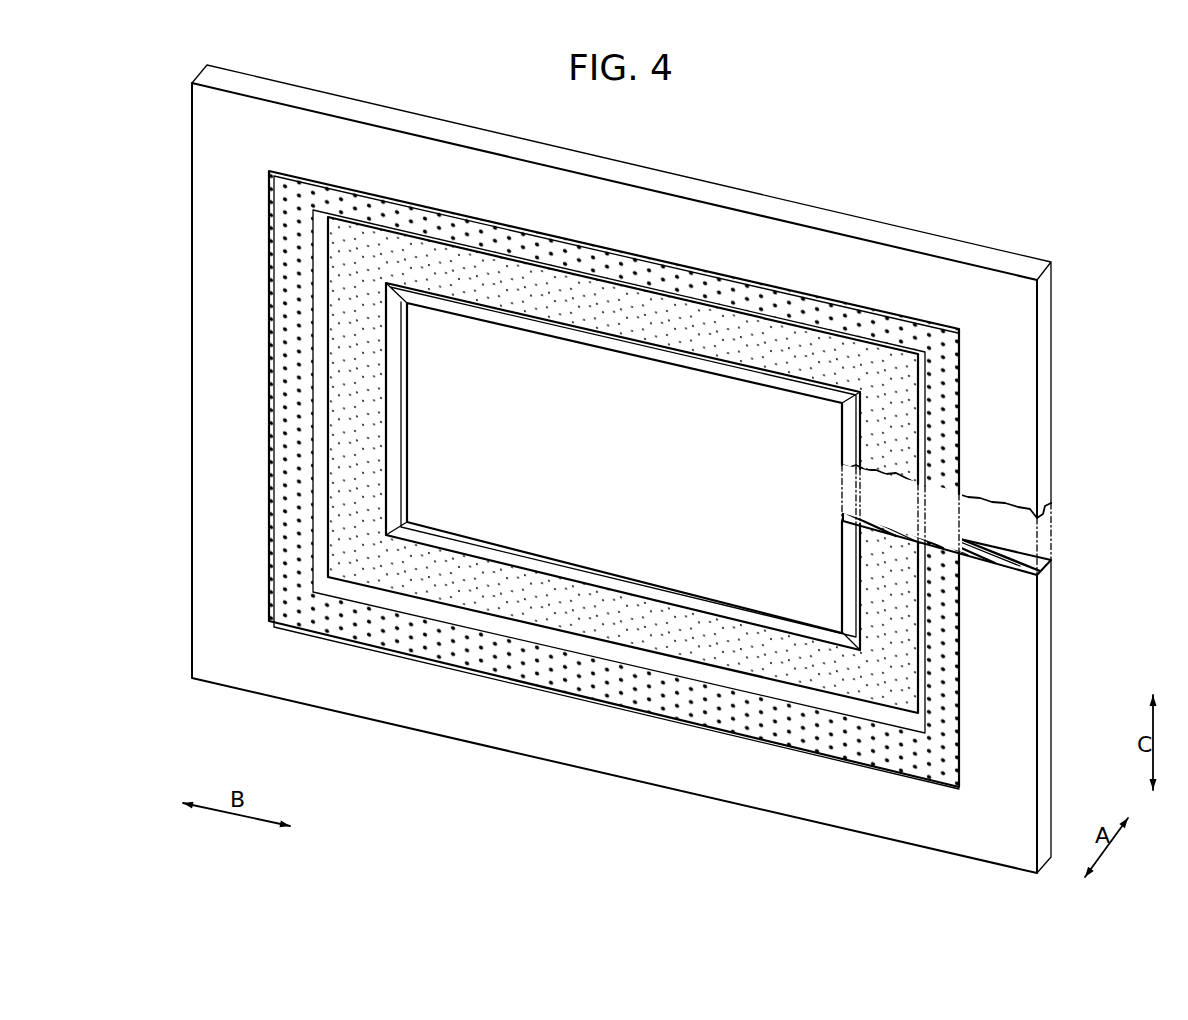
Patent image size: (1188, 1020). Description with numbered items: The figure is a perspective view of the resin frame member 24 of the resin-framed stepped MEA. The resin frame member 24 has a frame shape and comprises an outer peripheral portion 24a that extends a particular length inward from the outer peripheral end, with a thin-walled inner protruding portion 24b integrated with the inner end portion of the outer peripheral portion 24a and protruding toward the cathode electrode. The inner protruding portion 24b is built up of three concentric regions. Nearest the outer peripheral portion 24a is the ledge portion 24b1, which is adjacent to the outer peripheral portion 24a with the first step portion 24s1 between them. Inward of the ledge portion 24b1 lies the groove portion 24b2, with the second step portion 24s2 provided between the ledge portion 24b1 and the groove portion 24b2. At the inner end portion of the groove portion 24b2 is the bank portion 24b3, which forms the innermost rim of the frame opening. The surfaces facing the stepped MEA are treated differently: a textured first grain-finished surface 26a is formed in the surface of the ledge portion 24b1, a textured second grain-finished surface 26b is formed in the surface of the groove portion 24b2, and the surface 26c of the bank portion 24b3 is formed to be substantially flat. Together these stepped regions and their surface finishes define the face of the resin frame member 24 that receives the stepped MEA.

The resin frame member 24 is at (851, 177).
The outer peripheral portion 24a is at (1008, 410).
The inner protruding portion 24b is at (565, 811).
The ledge portion 24b1 is at (543, 660).
The groove portion 24b2 is at (465, 585).
The bank portion 24b3 is at (453, 548).
The first step portion 24s1 is at (318, 632).
The second step portion 24s2 is at (735, 680).
The first grain-finished surface 26a is at (940, 695).
The second grain-finished surface 26b is at (900, 605).
The surface of the bank portion 26c is at (713, 610).